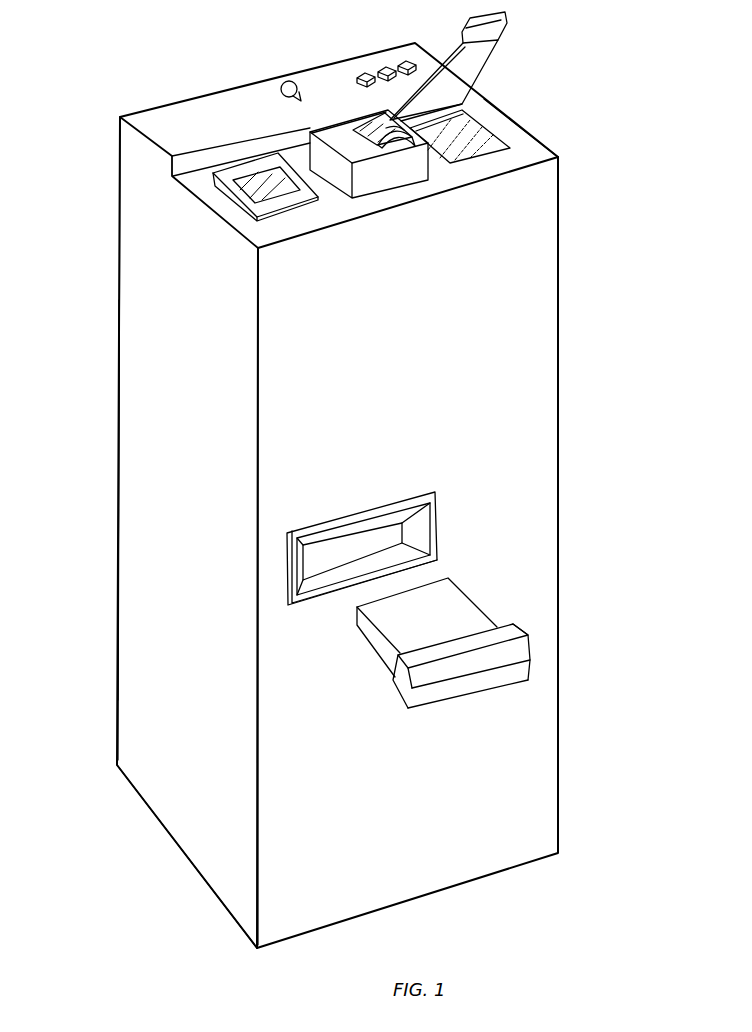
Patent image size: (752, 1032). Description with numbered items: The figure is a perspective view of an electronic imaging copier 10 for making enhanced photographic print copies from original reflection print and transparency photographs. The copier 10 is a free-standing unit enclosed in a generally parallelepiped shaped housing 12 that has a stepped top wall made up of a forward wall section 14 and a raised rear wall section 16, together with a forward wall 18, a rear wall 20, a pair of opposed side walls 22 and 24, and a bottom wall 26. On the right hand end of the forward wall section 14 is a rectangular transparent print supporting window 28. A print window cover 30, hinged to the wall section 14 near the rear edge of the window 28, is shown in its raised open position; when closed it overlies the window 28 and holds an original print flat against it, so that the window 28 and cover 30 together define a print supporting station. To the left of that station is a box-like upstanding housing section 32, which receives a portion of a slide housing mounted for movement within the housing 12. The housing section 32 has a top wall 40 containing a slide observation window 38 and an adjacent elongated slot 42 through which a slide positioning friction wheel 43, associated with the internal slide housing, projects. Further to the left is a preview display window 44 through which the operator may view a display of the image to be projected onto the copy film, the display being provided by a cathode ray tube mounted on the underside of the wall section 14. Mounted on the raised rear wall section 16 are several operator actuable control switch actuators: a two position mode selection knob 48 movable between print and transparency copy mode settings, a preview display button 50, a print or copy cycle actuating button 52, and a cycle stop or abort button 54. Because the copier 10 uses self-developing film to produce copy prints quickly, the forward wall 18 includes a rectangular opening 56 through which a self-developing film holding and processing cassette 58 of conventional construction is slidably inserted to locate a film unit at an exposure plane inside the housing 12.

The electronic imaging copier 10 is at (596, 79).
The housing 12 is at (482, 82).
The forward wall section 14 is at (528, 145).
The raised rear wall section 16 is at (422, 55).
The forward wall 18 is at (543, 313).
The rear wall 20 is at (118, 178).
The side wall 22 is at (558, 513).
The side wall 24 is at (137, 353).
The bottom wall 26 is at (155, 820).
The print supporting window 28 is at (480, 137).
The print window cover 30 is at (497, 43).
The housing section 32 is at (356, 182).
The slide observation window 38 is at (377, 130).
The top wall 40 is at (335, 135).
The elongated slot 42 is at (412, 148).
The slide positioning friction wheel 43 is at (393, 147).
The preview display window 44 is at (280, 182).
The mode selection knob 48 is at (288, 83).
The preview display button 50 is at (362, 75).
The print or copy cycle actuating button 52 is at (382, 67).
The cycle stop or abort button 54 is at (410, 62).
The rectangular opening 56 is at (313, 560).
The self-developing film holding and processing cassette 58 is at (468, 606).